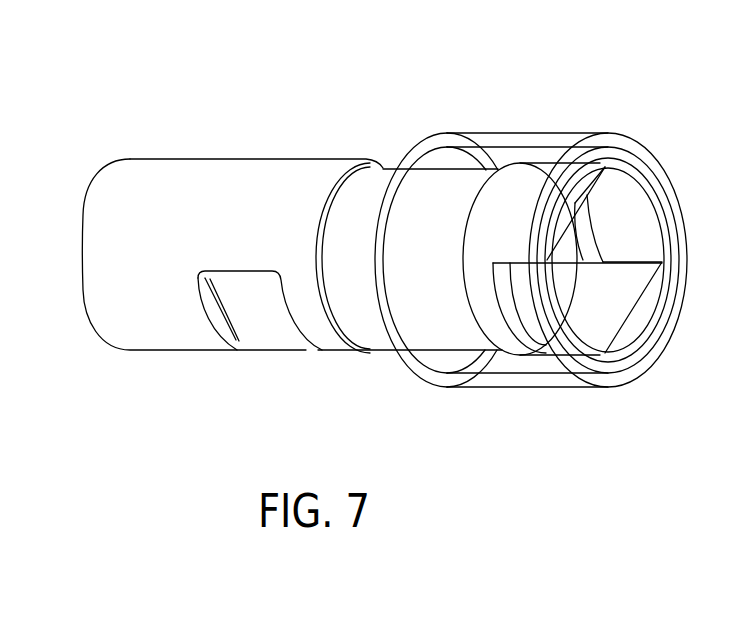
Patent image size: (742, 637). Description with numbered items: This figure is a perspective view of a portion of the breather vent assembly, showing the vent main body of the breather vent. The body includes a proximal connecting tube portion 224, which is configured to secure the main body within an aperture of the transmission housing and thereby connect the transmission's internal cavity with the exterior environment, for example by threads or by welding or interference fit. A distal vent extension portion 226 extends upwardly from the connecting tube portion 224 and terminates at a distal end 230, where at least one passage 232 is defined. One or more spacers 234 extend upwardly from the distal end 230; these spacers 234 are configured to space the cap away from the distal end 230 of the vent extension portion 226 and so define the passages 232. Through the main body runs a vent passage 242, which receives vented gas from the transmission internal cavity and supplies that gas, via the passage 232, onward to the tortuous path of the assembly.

The connecting tube portion 224 is at (156, 158).
The vent extension portion 226 is at (381, 170).
The distal end 230 is at (522, 328).
The passage 232 is at (644, 224).
The spacer 234 is at (579, 201).
The vent passage 242 is at (572, 296).